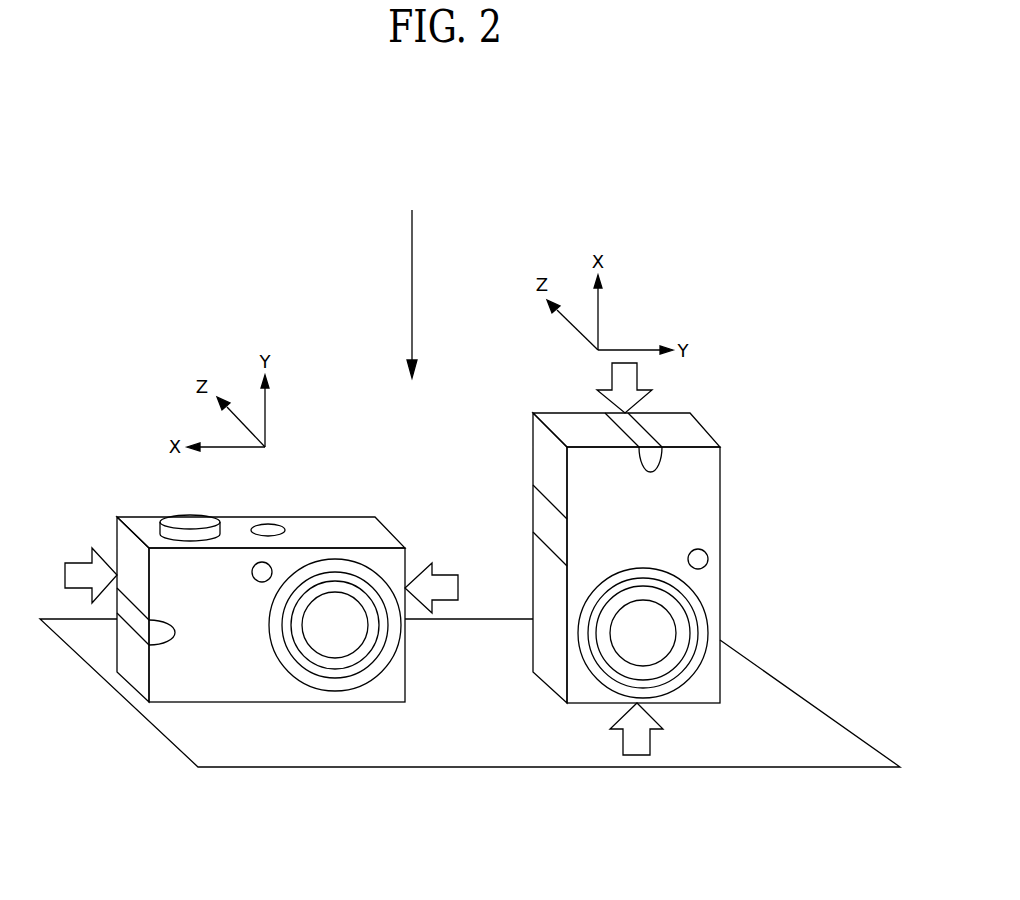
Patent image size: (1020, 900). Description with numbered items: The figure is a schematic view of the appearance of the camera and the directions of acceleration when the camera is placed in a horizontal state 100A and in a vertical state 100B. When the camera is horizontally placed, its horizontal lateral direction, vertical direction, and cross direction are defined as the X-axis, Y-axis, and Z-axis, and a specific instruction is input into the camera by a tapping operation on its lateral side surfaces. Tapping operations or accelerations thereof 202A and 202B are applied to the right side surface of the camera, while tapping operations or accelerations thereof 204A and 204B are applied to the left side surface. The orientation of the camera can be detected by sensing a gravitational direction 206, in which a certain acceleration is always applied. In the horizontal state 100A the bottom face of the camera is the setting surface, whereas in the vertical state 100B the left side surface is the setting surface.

The horizontal state 100A is at (205, 240).
The vertical state 100B is at (560, 224).
The tapping operation or acceleration 202A is at (72, 563).
The tapping operation or acceleration 204A is at (443, 575).
The tapping operation or acceleration 202B is at (612, 373).
The tapping operation or acceleration 204B is at (637, 755).
The gravitational direction 206 is at (412, 238).